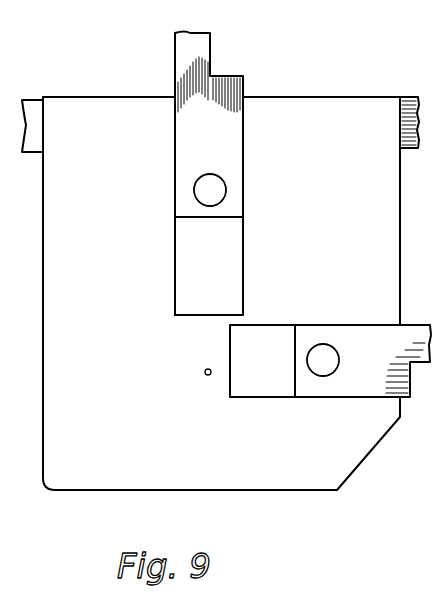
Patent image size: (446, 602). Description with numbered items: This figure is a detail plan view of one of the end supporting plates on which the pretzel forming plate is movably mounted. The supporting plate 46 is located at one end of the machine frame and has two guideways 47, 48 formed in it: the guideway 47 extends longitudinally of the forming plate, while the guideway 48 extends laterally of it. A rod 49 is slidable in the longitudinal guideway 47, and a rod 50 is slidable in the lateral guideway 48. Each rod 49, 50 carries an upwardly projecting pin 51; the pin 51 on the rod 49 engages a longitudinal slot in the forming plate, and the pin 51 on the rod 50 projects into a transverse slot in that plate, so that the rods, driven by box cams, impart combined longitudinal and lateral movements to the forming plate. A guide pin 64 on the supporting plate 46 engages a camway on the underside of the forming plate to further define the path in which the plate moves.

The supporting plate 46 is at (220, 293).
The guideway 47 is at (262, 361).
The guideway 48 is at (209, 266).
The rod 49 is at (243, 168).
The rod 50 is at (358, 328).
The pin 51 is at (215, 168).
The guide pin 64 is at (206, 375).